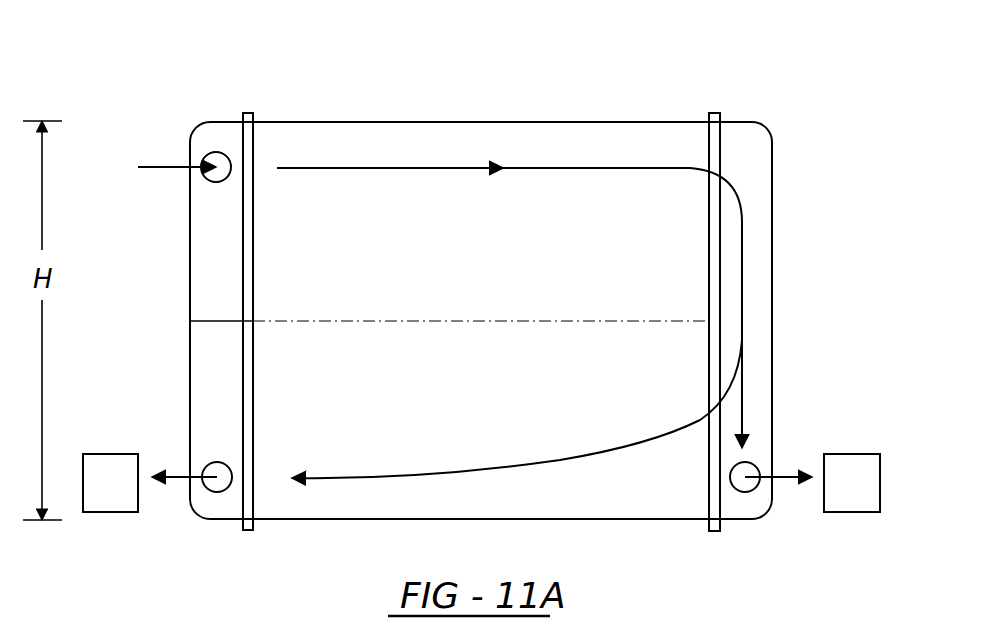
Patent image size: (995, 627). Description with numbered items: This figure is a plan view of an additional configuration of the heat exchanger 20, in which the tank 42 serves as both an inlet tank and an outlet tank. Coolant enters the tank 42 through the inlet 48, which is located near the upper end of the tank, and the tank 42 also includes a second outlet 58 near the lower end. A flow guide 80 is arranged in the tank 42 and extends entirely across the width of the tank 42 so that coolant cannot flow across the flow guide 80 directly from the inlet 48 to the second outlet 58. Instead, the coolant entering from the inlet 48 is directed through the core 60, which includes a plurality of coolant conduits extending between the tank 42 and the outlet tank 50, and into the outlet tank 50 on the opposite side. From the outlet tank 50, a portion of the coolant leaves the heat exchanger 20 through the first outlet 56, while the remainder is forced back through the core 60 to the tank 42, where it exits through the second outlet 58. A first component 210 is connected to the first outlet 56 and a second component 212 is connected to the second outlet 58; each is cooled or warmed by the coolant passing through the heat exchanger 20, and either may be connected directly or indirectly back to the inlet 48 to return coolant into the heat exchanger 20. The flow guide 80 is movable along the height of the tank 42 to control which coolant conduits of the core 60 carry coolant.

The heat exchanger 20 is at (558, 102).
The inlet tank 42 is at (205, 257).
The inlet 48 is at (208, 155).
The outlet tank 50 is at (752, 148).
The first outlet 56 is at (748, 494).
The second outlet 58 is at (213, 491).
The core 60 is at (360, 138).
The flow guide 80 is at (212, 321).
The first component 210 is at (851, 454).
The second component 212 is at (105, 454).